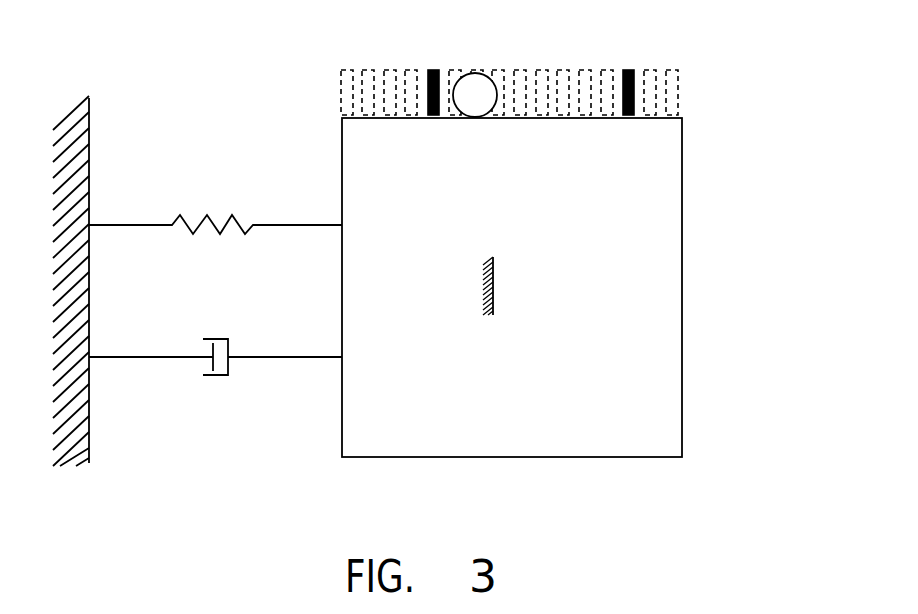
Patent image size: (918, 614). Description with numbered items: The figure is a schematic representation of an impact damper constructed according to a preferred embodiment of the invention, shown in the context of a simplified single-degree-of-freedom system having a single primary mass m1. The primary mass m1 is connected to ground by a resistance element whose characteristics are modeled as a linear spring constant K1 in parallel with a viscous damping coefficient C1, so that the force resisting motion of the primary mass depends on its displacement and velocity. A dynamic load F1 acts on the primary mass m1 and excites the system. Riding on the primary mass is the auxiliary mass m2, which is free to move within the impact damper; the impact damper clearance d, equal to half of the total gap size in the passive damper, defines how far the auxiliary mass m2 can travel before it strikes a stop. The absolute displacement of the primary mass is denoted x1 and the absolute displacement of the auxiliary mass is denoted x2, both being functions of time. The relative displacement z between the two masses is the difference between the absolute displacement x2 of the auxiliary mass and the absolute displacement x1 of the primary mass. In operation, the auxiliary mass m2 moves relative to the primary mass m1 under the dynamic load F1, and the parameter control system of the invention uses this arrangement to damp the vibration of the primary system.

The primary mass m1 is at (512, 288).
The auxiliary mass m2 is at (475, 95).
The linear spring constant K1 is at (215, 207).
The viscous damping coefficient C1 is at (215, 342).
The absolute displacement of primary mass x1 is at (573, 486).
The absolute displacement of auxiliary mass x2 is at (531, 35).
The impact damper clearance d is at (623, 37).
The relative displacement z is at (493, 287).
The dynamic load F1 is at (682, 287).